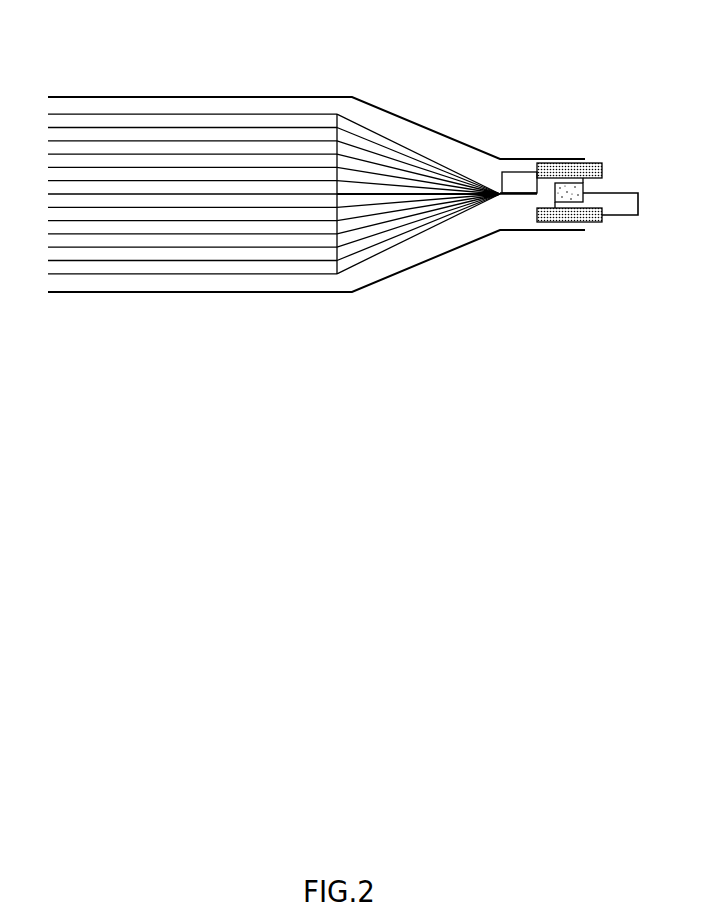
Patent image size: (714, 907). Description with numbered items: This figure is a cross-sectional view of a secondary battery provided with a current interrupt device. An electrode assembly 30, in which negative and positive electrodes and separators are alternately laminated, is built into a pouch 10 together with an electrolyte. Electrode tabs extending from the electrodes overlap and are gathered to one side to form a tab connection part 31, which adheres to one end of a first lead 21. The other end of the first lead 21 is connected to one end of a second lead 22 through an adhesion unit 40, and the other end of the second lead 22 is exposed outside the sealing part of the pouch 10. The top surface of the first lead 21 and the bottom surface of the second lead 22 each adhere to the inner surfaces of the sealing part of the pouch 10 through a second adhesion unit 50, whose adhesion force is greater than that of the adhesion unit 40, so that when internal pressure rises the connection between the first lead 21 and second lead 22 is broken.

The pouch 10 is at (198, 97).
The electrode assembly 30 is at (242, 274).
The first lead 21 is at (518, 180).
The tab connection part 31 is at (522, 195).
The second adhesion unit 50 is at (594, 172).
The adhesion unit 40 is at (578, 190).
The second lead 22 is at (625, 204).